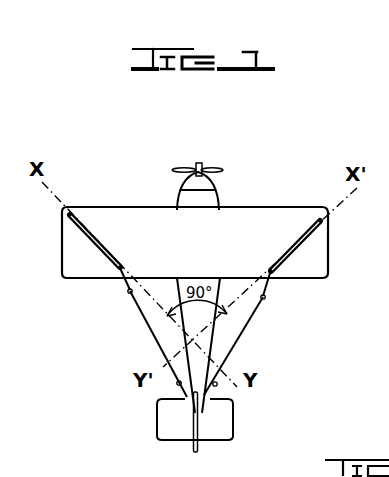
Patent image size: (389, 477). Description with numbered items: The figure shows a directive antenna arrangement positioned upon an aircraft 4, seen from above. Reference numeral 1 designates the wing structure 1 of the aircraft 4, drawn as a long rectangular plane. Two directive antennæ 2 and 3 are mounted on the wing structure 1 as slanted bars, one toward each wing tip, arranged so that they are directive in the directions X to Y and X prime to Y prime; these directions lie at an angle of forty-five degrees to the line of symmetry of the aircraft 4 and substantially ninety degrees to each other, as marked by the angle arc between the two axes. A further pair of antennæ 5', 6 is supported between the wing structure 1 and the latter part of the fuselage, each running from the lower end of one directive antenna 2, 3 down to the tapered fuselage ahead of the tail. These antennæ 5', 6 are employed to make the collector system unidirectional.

The wing structure 1 is at (108, 214).
The directive antenna 2 is at (305, 235).
The directive antenna 3 is at (97, 243).
The aircraft 4 is at (200, 178).
The right connecting rod 5' is at (239, 334).
The antenna 6 is at (150, 333).